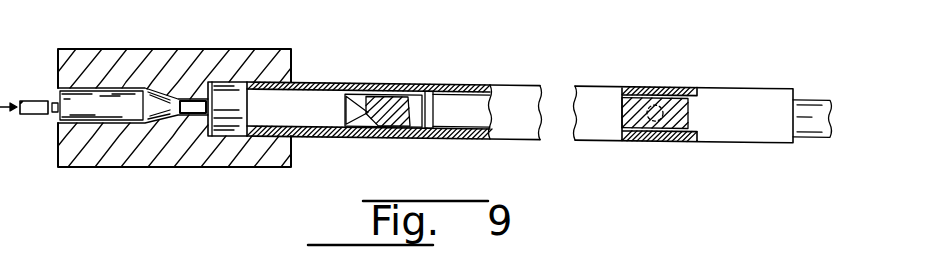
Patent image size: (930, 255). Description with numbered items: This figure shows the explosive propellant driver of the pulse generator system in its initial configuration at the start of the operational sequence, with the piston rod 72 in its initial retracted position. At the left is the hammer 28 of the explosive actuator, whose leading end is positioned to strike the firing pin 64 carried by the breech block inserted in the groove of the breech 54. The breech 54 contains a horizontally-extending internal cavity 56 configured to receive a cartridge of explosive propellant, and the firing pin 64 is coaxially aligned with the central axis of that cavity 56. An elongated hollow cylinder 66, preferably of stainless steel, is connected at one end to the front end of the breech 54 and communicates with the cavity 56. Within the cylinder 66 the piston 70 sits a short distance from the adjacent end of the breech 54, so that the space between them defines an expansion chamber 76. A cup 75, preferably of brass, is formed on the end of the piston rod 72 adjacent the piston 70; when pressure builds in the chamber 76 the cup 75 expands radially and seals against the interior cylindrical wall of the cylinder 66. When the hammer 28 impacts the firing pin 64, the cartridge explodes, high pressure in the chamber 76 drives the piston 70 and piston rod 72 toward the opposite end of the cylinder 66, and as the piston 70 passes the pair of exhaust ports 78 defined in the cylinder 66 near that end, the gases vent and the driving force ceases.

The hammer 28 is at (33, 113).
The breech 54 is at (190, 49).
The internal cavity 56 is at (78, 168).
The firing pin 64 is at (56, 100).
The cylinder 66 is at (513, 84).
The piston 70 is at (428, 96).
The piston rod 72 is at (485, 116).
The cup 75 is at (360, 100).
The expansion chamber 76 is at (285, 113).
The exhaust ports 78 is at (655, 100).